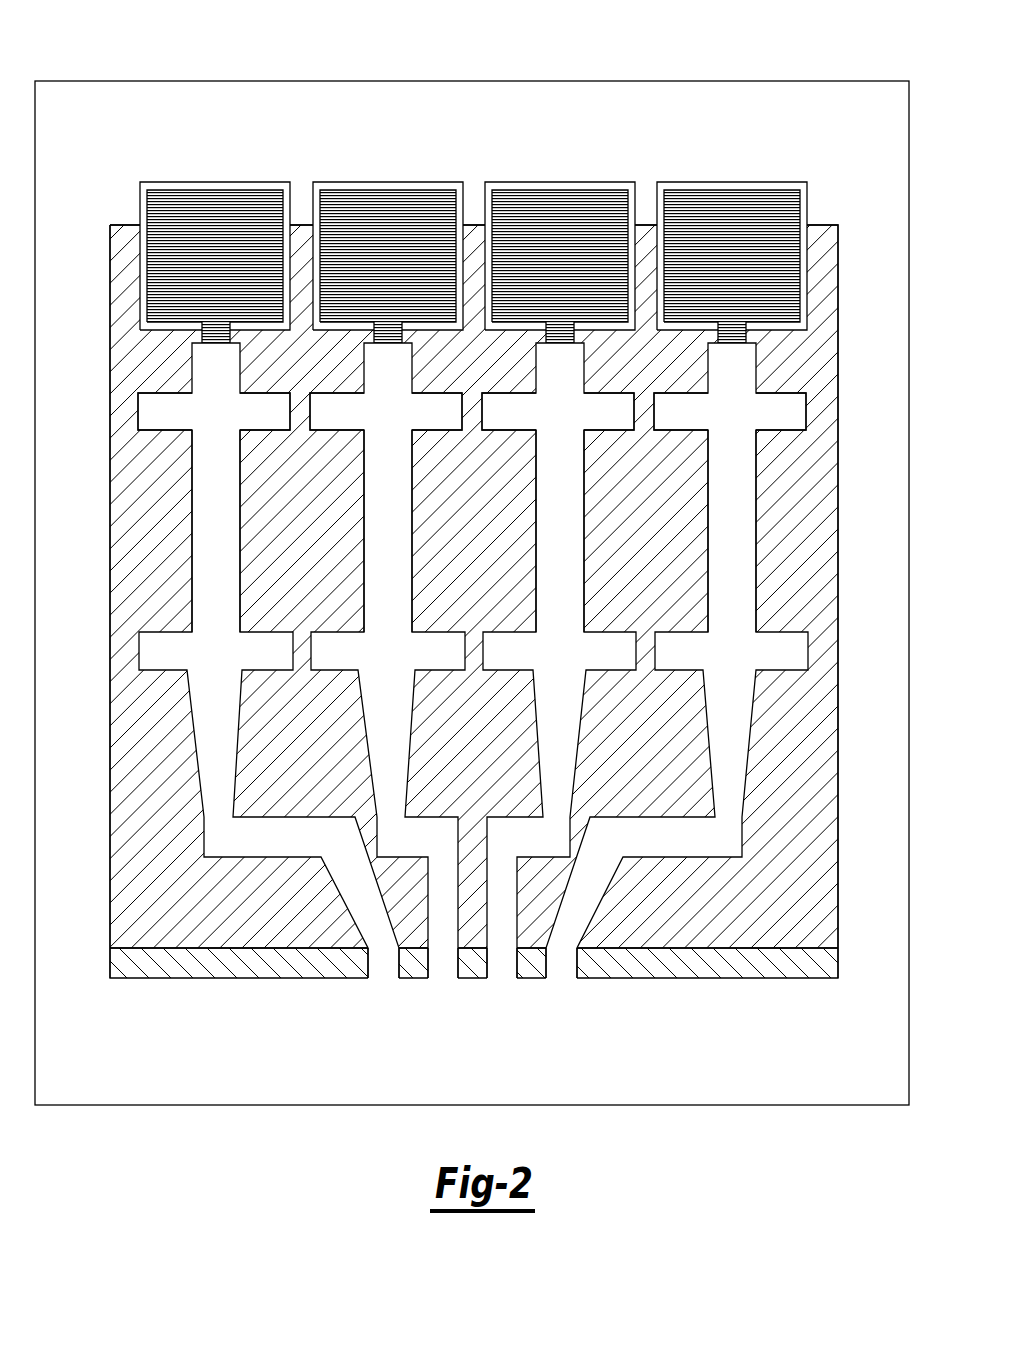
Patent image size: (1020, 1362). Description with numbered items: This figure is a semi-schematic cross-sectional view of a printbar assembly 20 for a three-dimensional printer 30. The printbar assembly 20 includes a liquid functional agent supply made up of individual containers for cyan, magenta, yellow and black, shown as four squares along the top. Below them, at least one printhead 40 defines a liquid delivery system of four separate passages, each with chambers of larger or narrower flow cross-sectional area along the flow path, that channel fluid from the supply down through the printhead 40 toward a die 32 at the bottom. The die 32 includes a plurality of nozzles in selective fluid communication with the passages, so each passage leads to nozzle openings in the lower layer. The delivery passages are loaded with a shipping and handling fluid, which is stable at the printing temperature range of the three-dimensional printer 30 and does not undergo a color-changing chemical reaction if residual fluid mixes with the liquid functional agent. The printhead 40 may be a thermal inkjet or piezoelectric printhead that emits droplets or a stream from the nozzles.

The printbar assembly 20 is at (795, 146).
The three-dimensional printer 30 is at (473, 81).
The die 32 is at (127, 980).
The printhead 40 is at (108, 283).